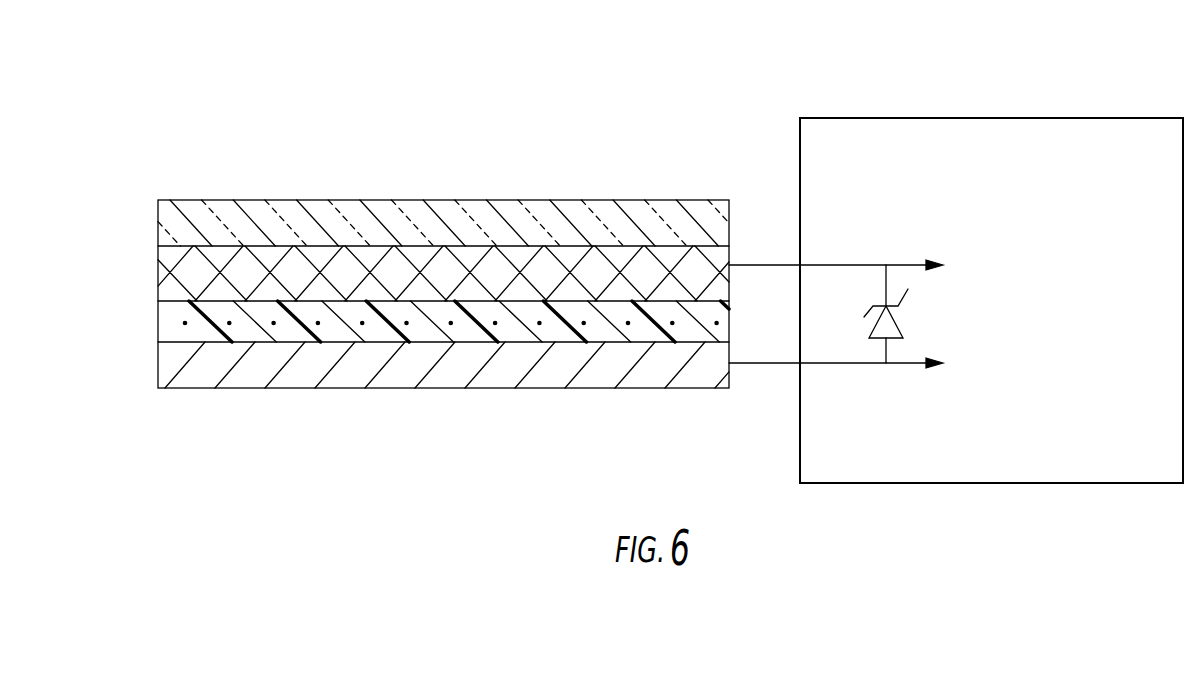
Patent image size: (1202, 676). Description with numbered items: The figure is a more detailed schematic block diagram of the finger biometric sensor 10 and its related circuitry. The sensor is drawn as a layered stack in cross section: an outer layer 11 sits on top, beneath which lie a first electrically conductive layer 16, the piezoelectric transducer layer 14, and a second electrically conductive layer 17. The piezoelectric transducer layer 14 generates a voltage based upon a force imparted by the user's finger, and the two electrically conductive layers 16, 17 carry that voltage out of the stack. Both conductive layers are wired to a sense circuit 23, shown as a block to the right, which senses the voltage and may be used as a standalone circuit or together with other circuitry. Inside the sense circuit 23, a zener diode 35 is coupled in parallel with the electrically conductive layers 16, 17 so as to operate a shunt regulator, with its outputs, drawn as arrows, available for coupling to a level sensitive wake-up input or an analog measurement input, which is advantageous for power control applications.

The finger biometric sensor 10 is at (132, 153).
The outer layer 11 is at (163, 225).
The electrically conductive layer 16 is at (168, 272).
The piezoelectric transducer layer 14 is at (170, 330).
The electrically conductive layer 17 is at (172, 368).
The sense circuit 23 is at (887, 118).
The zener diode 35 is at (872, 327).